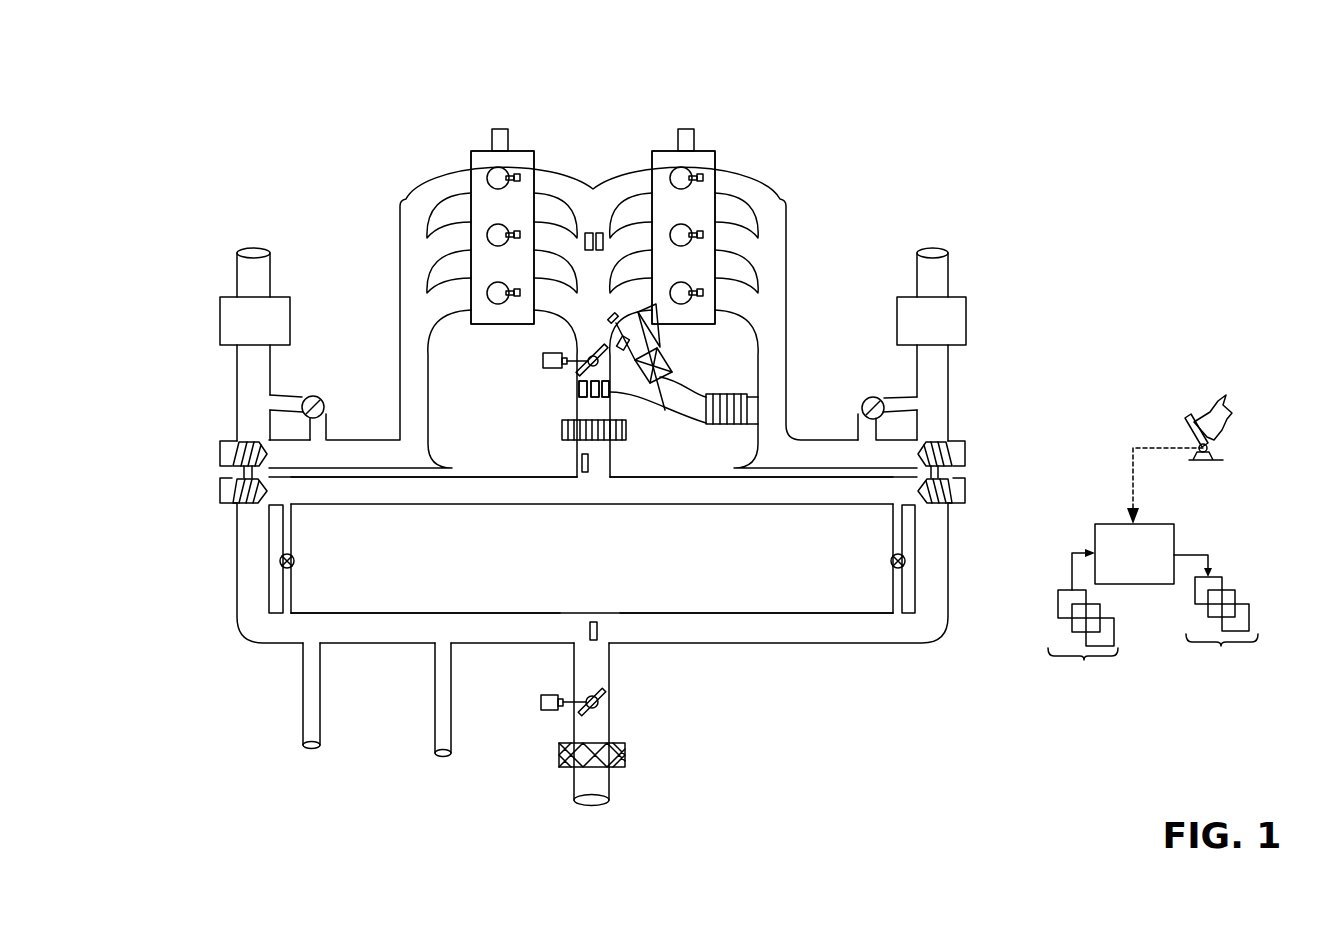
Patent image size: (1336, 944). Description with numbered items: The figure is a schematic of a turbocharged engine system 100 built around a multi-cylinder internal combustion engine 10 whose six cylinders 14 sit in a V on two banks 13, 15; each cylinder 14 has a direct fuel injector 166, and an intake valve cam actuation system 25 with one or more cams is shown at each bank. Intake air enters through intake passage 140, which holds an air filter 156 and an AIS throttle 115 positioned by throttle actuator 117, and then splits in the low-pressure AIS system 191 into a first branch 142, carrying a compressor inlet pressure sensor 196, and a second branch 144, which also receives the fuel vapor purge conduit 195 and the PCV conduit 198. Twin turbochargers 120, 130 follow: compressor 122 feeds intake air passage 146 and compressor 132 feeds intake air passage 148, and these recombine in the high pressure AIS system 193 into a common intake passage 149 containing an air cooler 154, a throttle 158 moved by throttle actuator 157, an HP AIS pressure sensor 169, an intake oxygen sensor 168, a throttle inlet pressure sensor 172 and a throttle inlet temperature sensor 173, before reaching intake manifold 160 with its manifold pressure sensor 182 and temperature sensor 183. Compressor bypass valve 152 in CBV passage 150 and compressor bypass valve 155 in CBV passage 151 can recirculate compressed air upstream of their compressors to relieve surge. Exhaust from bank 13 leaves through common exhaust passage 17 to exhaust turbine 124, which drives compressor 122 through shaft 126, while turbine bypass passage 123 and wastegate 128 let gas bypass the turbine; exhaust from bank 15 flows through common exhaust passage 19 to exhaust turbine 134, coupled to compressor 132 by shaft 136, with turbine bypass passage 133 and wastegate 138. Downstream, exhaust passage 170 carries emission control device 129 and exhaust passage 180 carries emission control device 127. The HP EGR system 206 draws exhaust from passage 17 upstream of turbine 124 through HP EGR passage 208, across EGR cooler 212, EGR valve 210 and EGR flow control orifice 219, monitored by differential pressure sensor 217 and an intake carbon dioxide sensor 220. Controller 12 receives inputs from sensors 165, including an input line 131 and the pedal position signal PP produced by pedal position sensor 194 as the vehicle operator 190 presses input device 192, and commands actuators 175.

The turbocharged engine system 100 is at (218, 158).
The internal combustion engine 10 is at (848, 152).
The second bank 15 is at (478, 151).
The first bank 13 is at (705, 151).
The intake valve cam actuation system 25 is at (505, 130).
The cylinder 14 is at (689, 228).
The fuel injector 166 is at (702, 235).
The intake manifold 160 is at (592, 168).
The common exhaust passage 19 is at (400, 372).
The common exhaust passage 17 is at (786, 378).
The intake manifold pressure sensor 182 is at (586, 250).
The intake manifold temperature sensor 183 is at (602, 250).
The exhaust passage 180 is at (271, 293).
The emission control device 127 is at (240, 331).
The turbine bypass passage 133 is at (285, 396).
The wastegate 138 is at (323, 401).
The turbocharger 130 is at (250, 428).
The exhaust turbine 134 is at (240, 443).
The shaft 136 is at (235, 490).
The compressor 132 is at (237, 508).
The exhaust passage 170 is at (916, 278).
The emission control device 129 is at (918, 324).
The turbine bypass passage 123 is at (905, 397).
The wastegate 128 is at (862, 400).
The turbocharger 120 is at (930, 412).
The exhaust turbine 124 is at (951, 445).
The shaft 126 is at (953, 490).
The compressor 122 is at (950, 507).
The high pressure AIS system 193 is at (326, 501).
The intake air passage 148 is at (362, 506).
The intake air passage 146 is at (748, 506).
The CBV passage 150 is at (292, 525).
The compressor bypass valve 152 is at (295, 562).
The CBV passage 151 is at (897, 568).
The compressor bypass valve 155 is at (890, 560).
The low-pressure AIS system 191 is at (329, 641).
The second branch of the intake passage 144 is at (390, 614).
The first branch of the intake passage 142 is at (758, 614).
The compressor inlet pressure sensor 196 is at (591, 622).
The fuel vapor purge conduit 195 is at (321, 706).
The positive crankcase ventilation conduit 198 is at (452, 706).
The intake passage 140 is at (609, 789).
The air filter 156 is at (626, 752).
The AIS throttle 115 is at (594, 694).
The throttle actuator 117 is at (542, 697).
The throttle actuator 157 is at (545, 353).
The throttle 158 is at (590, 357).
The intake carbon dioxide sensor 220 is at (610, 314).
The differential pressure sensor 217 is at (621, 350).
The EGR flow control orifice 219 is at (647, 334).
The EGR valve 210 is at (672, 369).
The HP EGR passage 208 is at (686, 422).
The HP EGR system 206 is at (689, 446).
The EGR cooler 212 is at (718, 394).
The common intake passage 149 is at (578, 386).
The intake oxygen sensor 168 is at (580, 393).
The throttle inlet pressure sensor 172 is at (594, 398).
The throttle inlet temperature sensor 173 is at (605, 398).
The air cooler 154 is at (627, 441).
The HP AIS pressure sensor 169 is at (580, 464).
The controller 12 is at (1134, 554).
The input signal 131 is at (1071, 557).
The sensors 165 is at (1083, 636).
The actuators 175 is at (1216, 612).
The vehicle operator 190 is at (1230, 409).
The input device 192 is at (1186, 426).
The pedal position sensor 194 is at (1212, 453).
The pedal position signal PP is at (1136, 503).